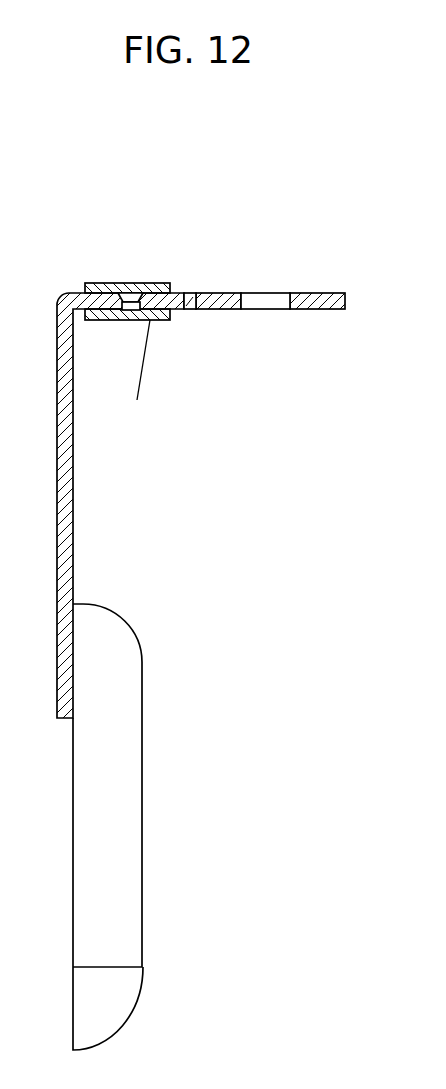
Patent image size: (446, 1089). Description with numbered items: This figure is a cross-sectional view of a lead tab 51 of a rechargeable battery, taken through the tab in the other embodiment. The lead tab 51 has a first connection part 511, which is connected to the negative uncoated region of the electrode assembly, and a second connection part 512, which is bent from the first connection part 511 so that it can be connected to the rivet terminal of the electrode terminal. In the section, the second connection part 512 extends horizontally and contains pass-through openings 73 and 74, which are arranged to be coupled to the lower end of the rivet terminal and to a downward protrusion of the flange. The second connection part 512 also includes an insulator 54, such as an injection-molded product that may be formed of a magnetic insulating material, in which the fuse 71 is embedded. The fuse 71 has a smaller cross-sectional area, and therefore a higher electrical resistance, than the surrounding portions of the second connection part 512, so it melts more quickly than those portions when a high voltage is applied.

The lead tab 51 is at (171, 685).
The first connection part 511 is at (107, 635).
The second connection part 512 is at (137, 400).
The insulator 54 is at (155, 283).
The fuse 71 is at (128, 293).
The pass-through opening 73 is at (264, 303).
The pass-through opening 74 is at (189, 304).